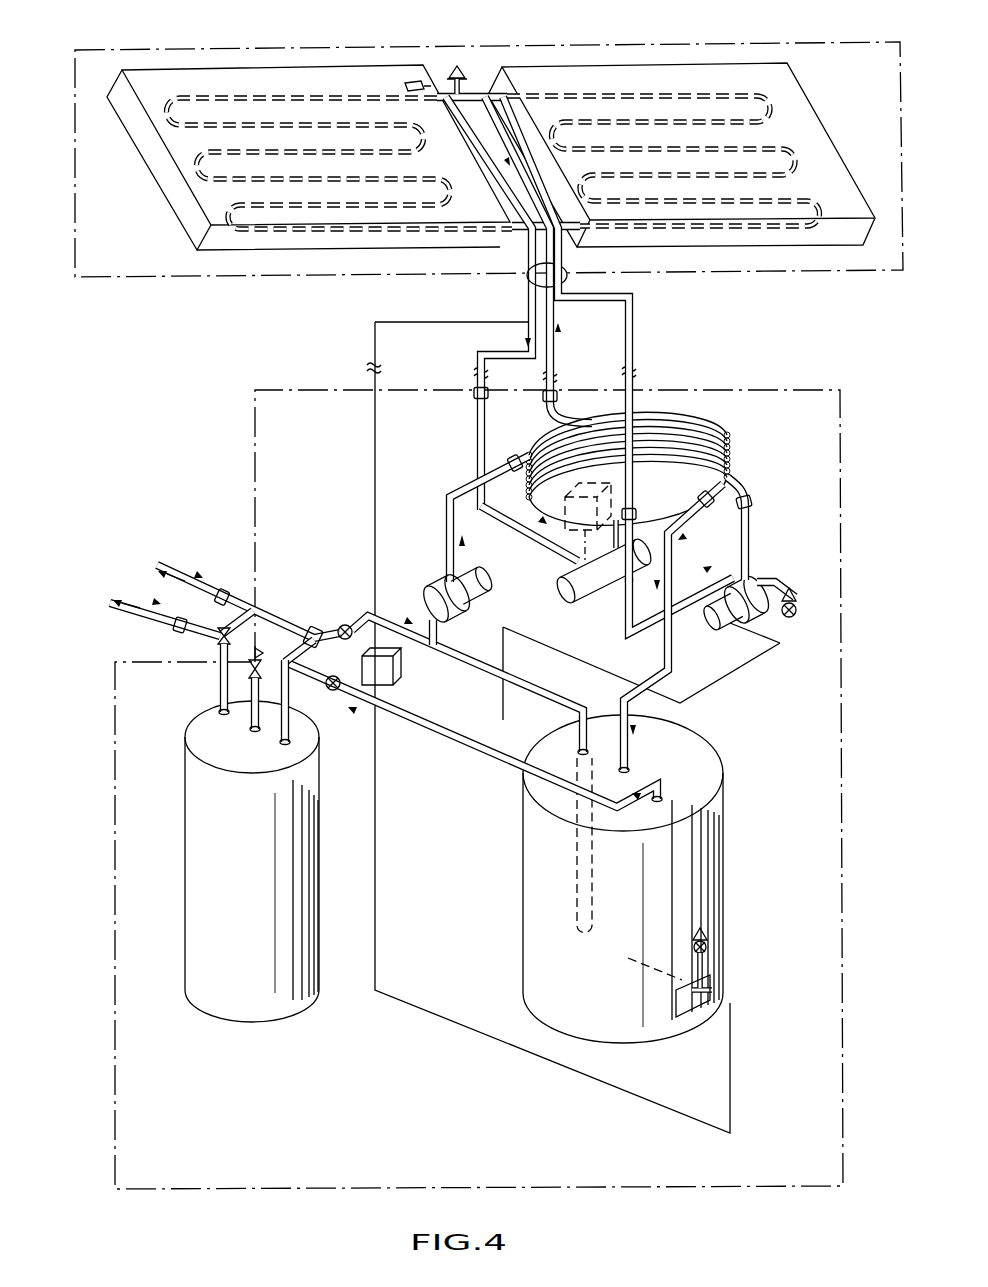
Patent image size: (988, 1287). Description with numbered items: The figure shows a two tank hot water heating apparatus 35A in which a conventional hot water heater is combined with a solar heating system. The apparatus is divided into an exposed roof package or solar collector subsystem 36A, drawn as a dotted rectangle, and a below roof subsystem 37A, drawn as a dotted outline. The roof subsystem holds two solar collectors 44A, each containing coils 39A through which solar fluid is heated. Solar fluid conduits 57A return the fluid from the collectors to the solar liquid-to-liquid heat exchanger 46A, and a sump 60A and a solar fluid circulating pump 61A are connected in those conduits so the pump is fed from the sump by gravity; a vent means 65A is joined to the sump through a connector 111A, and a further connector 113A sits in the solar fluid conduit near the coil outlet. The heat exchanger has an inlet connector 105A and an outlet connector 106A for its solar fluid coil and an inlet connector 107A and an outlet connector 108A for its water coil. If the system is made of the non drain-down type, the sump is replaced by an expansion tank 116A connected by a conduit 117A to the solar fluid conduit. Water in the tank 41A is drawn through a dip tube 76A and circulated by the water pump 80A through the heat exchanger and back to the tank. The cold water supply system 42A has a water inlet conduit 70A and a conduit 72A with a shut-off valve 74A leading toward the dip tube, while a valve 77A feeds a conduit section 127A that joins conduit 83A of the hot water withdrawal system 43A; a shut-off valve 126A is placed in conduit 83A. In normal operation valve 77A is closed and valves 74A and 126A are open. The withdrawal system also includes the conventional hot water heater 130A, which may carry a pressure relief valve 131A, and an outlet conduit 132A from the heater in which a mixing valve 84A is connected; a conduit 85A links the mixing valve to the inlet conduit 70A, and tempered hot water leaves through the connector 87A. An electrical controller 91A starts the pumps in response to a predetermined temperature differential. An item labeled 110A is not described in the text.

The hot water heating apparatus 35A is at (61, 96).
The solar collector subsystem 36A is at (207, 278).
The below roof subsystem 37A is at (298, 388).
The coils 39A is at (793, 153).
The water tank 41A is at (722, 838).
The cold water supply system 42A is at (204, 565).
The hot water withdrawal system 43A is at (147, 629).
The solar collectors 44A is at (788, 97).
The solar liquid-to-liquid heat exchanger 46A is at (712, 425).
The solar fluid conduits 57A is at (618, 612).
The sump 60A is at (566, 582).
The solar fluid circulating pump 61A is at (752, 620).
The vent means 65A is at (443, 60).
The water inlet conduit 70A is at (252, 610).
The conduit 72A is at (347, 622).
The shut-off valve 74A is at (320, 628).
The dip tube 76A is at (577, 860).
The valve 77A is at (314, 630).
The water pump 80A is at (425, 585).
The conduit 83A is at (497, 758).
The mixing valve 84A is at (215, 646).
The conduit 85A is at (212, 606).
The connector 87A is at (158, 632).
The electrical controller 91A is at (384, 665).
The inlet connector 105A is at (750, 500).
The outlet connector 106A is at (557, 393).
The inlet connector 107A is at (510, 455).
The outlet connector 108A is at (711, 507).
The fitting 110A is at (222, 590).
The connector 111A is at (633, 512).
The connector 113A is at (472, 398).
The expansion tank 116A is at (563, 497).
The conduit 117A is at (603, 588).
The shut-off valve 126A is at (333, 695).
The conduit section 127A is at (290, 658).
The conventional hot water heater 130A is at (185, 858).
The pressure relief valve 131A is at (251, 670).
The outlet conduit 132A is at (222, 700).